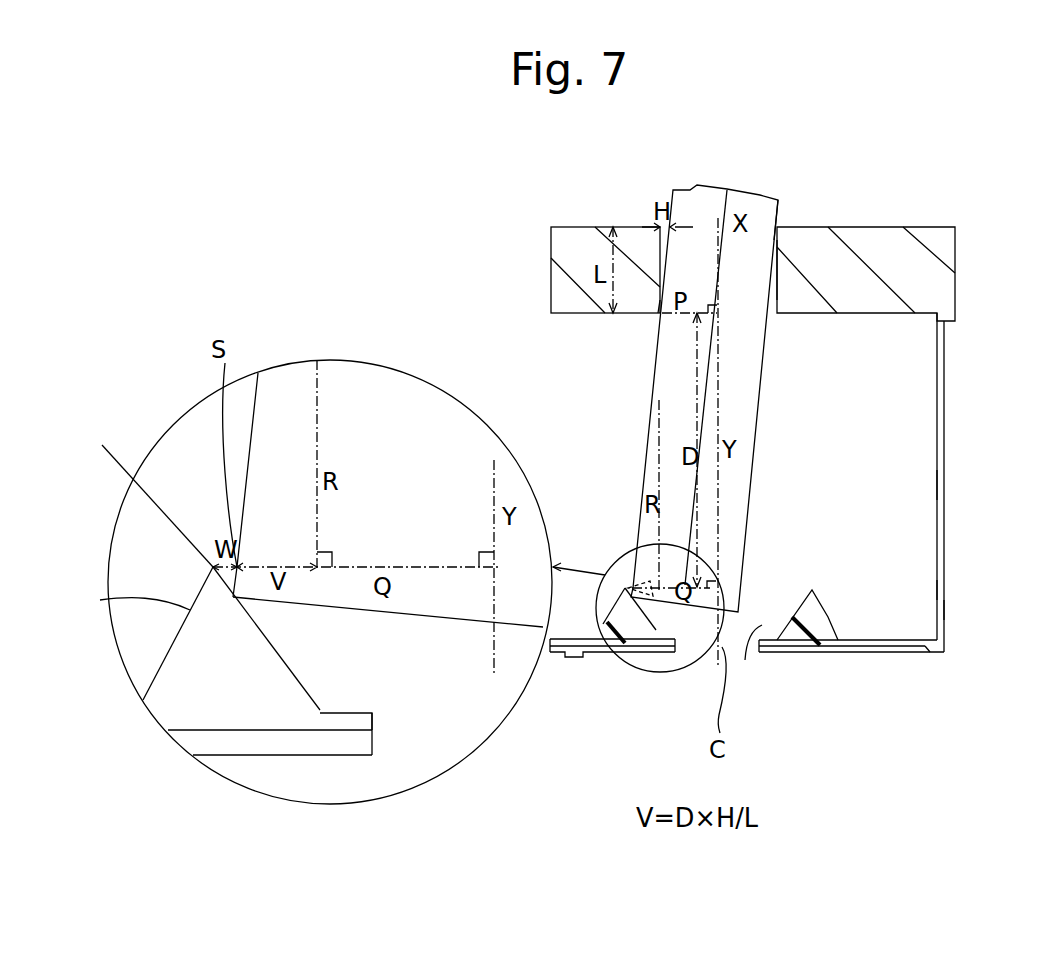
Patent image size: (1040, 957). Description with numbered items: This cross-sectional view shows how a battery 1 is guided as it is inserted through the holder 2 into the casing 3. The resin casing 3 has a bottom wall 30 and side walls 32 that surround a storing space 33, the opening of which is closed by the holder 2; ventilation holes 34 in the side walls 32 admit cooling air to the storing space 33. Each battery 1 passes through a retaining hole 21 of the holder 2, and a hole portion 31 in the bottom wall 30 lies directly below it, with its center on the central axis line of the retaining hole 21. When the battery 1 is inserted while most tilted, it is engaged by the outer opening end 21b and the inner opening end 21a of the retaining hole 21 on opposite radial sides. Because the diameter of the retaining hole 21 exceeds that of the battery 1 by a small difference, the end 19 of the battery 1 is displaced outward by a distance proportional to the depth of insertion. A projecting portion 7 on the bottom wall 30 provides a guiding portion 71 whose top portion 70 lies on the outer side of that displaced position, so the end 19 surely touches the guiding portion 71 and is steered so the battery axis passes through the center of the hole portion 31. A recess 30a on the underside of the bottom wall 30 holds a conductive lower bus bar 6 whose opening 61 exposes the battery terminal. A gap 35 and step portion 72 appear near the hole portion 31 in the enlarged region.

The battery 1 is at (754, 435).
The holder 2 is at (936, 275).
The casing 3 is at (944, 345).
The lower bus bar 6 is at (883, 648).
The projecting portion 7 is at (828, 617).
The end of battery 19 is at (483, 620).
The retaining hole 21 is at (778, 272).
The inner opening end 21a is at (658, 313).
The outer opening end 21b is at (772, 268).
The bottom wall 30 is at (853, 650).
The recess 30a is at (922, 650).
The hole portion 31 is at (372, 717).
The side wall 32 is at (944, 610).
The storing space 33 is at (903, 483).
The ventilation hole 34 is at (937, 590).
The gap 35 is at (745, 660).
The opening 61 is at (372, 749).
The top portion 70 is at (150, 492).
The guiding portion 71 is at (260, 623).
The step portion 72 is at (320, 713).